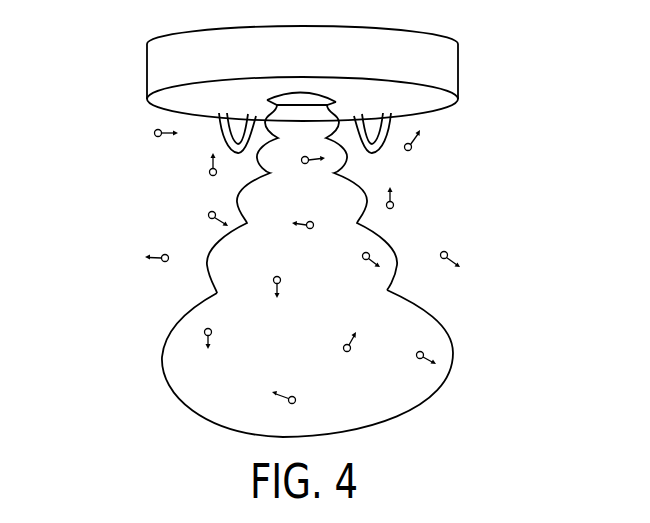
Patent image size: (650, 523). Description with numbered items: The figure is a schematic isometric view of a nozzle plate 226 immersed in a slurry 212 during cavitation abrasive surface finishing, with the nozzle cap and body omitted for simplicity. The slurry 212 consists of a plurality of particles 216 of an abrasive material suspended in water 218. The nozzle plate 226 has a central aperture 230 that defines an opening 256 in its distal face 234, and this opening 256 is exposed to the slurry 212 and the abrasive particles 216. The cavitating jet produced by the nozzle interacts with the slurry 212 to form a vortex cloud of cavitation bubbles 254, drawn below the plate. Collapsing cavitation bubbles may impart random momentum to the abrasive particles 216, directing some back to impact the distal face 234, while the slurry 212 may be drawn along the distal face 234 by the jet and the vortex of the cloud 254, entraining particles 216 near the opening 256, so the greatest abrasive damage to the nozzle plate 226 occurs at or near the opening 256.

The slurry 212 is at (131, 188).
The particles 216 is at (205, 330).
The water 218 is at (145, 240).
The nozzle plate 226 is at (443, 58).
The central aperture 230 is at (337, 103).
The distal face 234 is at (439, 116).
The vortex cloud of cavitation bubbles 254 is at (452, 348).
The opening 256 is at (273, 98).